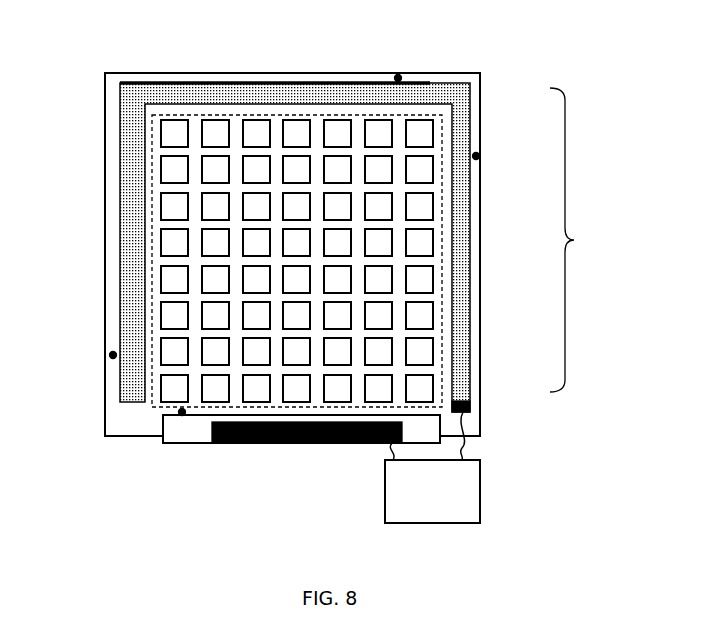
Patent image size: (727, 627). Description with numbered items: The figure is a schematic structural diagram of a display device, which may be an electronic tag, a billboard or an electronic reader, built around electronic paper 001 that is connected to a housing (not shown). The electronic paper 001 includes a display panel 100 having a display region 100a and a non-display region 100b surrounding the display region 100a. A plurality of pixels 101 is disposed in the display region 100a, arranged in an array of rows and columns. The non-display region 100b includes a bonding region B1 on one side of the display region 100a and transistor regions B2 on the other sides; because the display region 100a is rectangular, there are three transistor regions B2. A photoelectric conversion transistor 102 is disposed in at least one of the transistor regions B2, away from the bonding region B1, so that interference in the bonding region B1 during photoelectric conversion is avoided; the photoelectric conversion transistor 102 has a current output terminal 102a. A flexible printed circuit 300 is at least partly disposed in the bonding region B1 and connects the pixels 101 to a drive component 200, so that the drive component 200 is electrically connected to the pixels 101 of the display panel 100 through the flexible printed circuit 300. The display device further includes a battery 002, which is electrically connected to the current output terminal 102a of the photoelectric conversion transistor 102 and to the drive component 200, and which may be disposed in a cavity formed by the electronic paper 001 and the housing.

The display panel 100 is at (300, 260).
The display region 100a is at (292, 219).
The non-display region 100b is at (512, 82).
The pixels 101 is at (262, 128).
The photoelectric conversion transistor 102 is at (335, 247).
The current output terminal 102a is at (468, 407).
The drive component 200 is at (308, 445).
The flexible printed circuit 300 is at (301, 462).
The battery 002 is at (468, 497).
The electronic paper 001 is at (585, 240).
The bonding region B1 is at (182, 412).
The transistor regions B2 is at (398, 78).